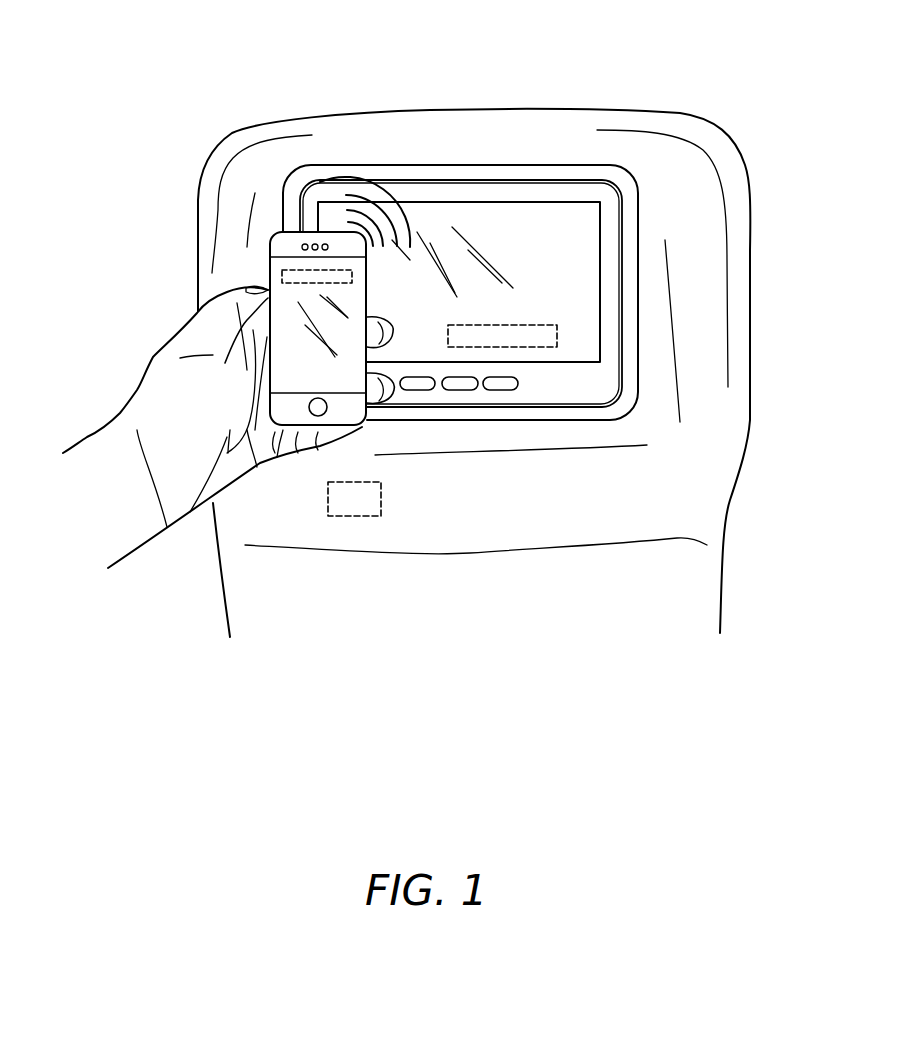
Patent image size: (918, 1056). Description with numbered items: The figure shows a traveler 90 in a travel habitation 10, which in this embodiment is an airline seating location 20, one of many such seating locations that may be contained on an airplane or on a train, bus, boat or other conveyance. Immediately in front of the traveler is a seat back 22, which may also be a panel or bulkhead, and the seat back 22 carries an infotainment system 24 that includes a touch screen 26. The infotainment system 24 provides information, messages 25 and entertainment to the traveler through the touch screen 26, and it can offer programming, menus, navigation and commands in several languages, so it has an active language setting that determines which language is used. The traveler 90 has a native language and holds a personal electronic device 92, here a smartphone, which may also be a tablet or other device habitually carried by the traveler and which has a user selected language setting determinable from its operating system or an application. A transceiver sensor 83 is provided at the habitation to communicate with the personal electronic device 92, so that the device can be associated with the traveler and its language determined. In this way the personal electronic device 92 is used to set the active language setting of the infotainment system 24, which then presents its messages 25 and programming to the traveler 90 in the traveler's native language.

The travel habitation 10 is at (208, 100).
The airline seating location 20 is at (160, 57).
The seat back 22 is at (730, 150).
The infotainment system 24 is at (638, 330).
The messages 25 is at (557, 347).
The touch screen 26 is at (600, 277).
The transceiver sensor 83 is at (381, 500).
The traveler 90 is at (88, 433).
The personal electronic device 92 is at (267, 258).